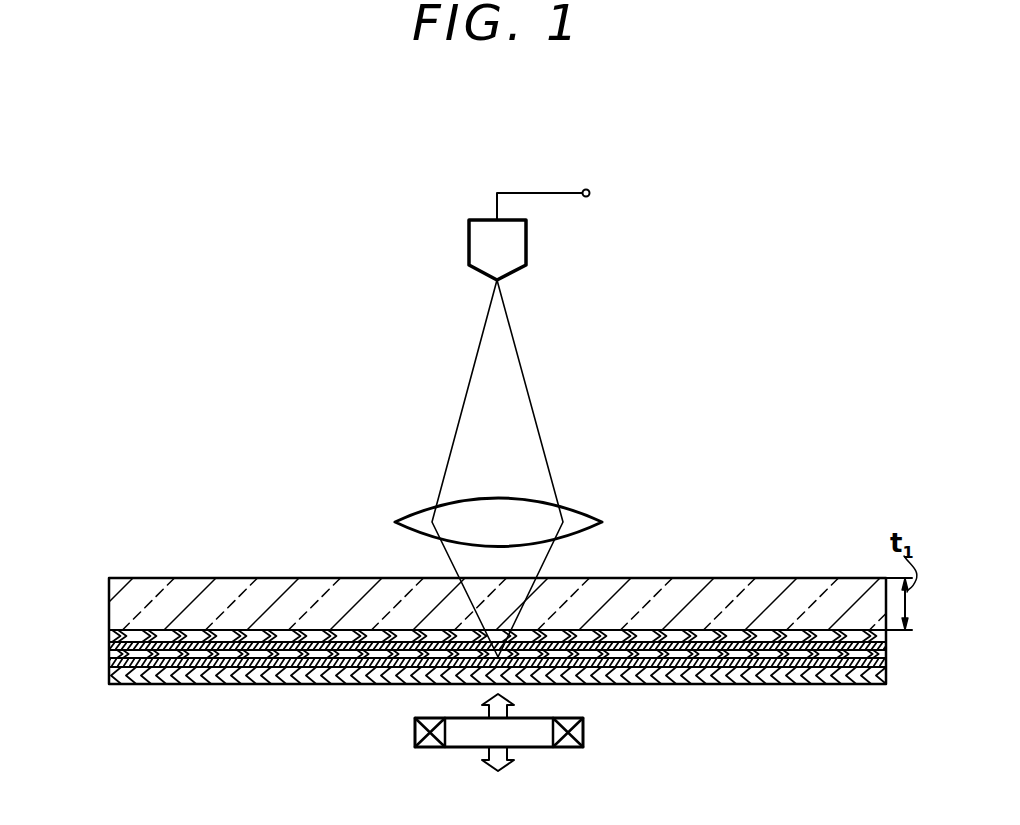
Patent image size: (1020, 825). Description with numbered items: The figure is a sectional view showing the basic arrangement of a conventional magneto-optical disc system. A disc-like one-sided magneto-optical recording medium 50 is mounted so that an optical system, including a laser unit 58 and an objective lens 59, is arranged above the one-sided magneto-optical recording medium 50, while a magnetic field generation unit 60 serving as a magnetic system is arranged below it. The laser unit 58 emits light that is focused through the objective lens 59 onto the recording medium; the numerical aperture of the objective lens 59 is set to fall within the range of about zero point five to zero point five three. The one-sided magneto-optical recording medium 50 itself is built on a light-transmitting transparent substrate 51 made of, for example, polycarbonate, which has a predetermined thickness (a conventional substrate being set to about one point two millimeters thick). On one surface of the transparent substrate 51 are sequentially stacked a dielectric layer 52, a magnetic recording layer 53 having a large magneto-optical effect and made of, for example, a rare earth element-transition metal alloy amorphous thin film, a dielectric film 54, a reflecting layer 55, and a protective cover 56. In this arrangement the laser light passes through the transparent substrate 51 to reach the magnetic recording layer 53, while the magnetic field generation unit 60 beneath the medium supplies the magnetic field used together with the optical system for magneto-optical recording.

The one-sided magneto-optical recording medium 50 is at (197, 552).
The transparent substrate 51 is at (794, 592).
The dielectric layer 52 is at (109, 636).
The magnetic recording layer 53 is at (109, 647).
The dielectric film 54 is at (109, 654).
The reflecting layer 55 is at (109, 663).
The protective cover 56 is at (109, 675).
The laser unit 58 is at (518, 243).
The objective lens 59 is at (578, 520).
The magnetic field generation unit 60 is at (530, 734).